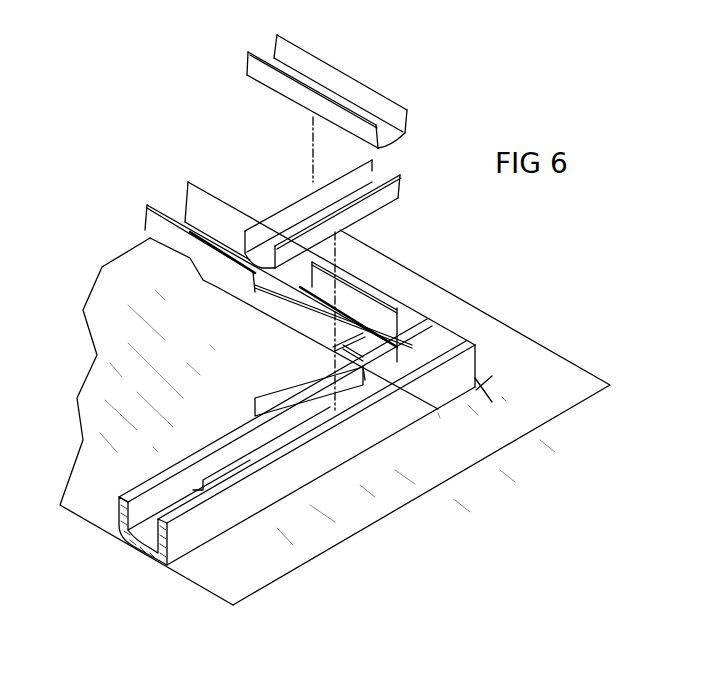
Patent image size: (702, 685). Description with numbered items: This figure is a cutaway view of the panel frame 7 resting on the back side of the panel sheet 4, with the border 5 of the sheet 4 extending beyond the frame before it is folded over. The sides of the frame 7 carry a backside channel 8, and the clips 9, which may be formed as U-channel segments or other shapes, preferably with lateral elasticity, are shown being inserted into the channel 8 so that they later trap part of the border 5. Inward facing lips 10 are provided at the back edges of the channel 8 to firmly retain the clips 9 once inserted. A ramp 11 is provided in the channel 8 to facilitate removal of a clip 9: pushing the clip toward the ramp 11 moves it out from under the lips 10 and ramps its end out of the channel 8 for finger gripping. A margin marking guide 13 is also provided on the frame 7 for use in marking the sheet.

The panel sheet 4 is at (85, 378).
The border 5 is at (510, 350).
The panel frame 7 is at (207, 523).
The backside channel 8 is at (255, 440).
The clips 9 is at (290, 98).
The inward facing lips 10 is at (305, 398).
The ramp 11 is at (200, 487).
The margin marking guide 13 is at (308, 367).